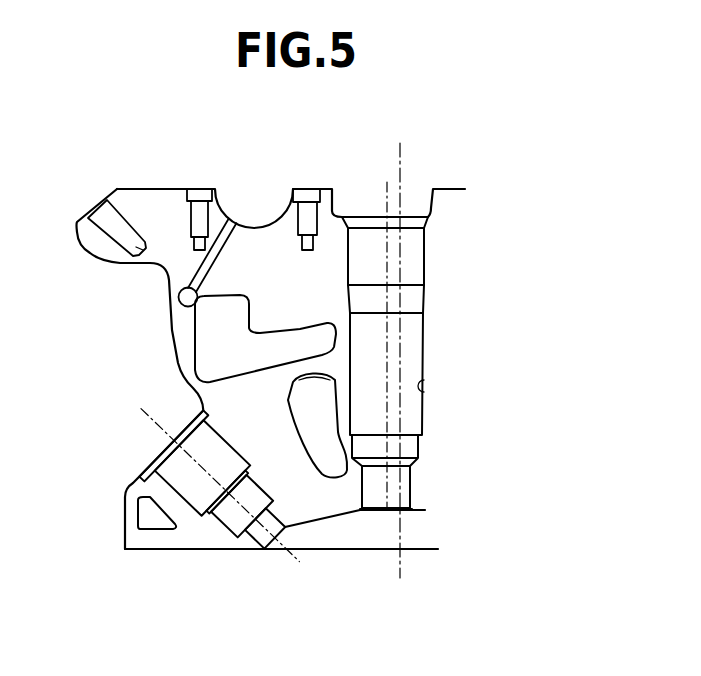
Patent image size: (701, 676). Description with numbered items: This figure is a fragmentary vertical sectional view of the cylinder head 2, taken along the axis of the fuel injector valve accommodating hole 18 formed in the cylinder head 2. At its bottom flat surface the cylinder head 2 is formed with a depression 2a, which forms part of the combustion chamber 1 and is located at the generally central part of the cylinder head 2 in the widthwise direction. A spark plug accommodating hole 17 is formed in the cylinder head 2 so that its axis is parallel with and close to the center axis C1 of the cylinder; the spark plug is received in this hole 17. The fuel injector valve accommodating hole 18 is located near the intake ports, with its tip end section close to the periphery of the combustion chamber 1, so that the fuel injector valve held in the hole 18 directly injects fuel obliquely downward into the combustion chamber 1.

The combustion chamber 1 is at (351, 535).
The cylinder head 2 is at (165, 185).
The depression 2a is at (309, 523).
The spark plug accommodating hole 17 is at (424, 386).
The fuel injector valve accommodating hole 18 is at (200, 502).
The center axis of the cylinder C1 is at (400, 562).